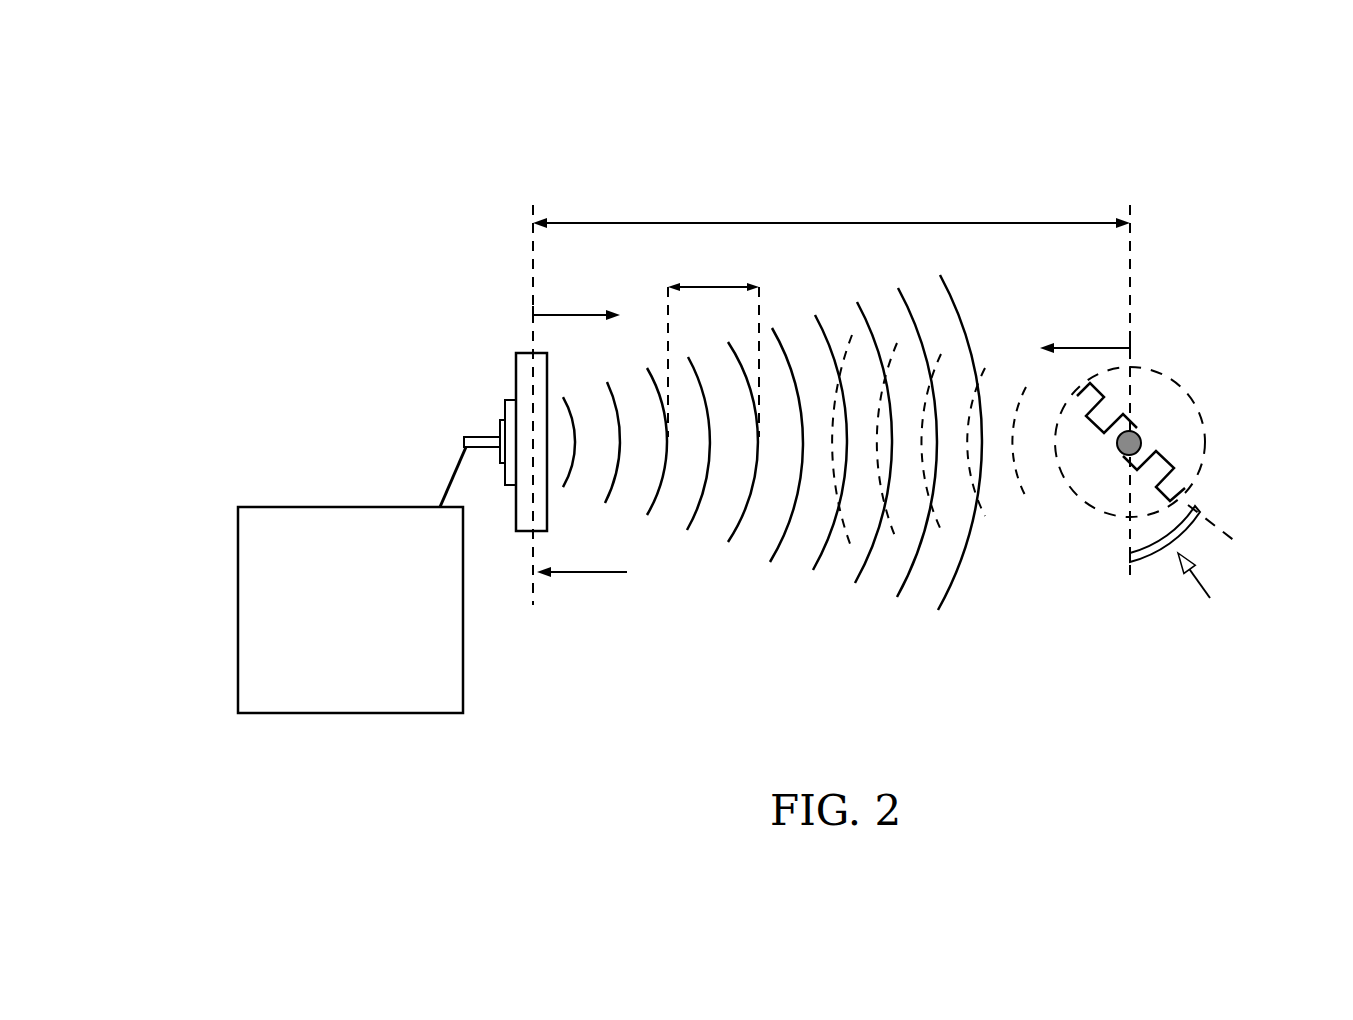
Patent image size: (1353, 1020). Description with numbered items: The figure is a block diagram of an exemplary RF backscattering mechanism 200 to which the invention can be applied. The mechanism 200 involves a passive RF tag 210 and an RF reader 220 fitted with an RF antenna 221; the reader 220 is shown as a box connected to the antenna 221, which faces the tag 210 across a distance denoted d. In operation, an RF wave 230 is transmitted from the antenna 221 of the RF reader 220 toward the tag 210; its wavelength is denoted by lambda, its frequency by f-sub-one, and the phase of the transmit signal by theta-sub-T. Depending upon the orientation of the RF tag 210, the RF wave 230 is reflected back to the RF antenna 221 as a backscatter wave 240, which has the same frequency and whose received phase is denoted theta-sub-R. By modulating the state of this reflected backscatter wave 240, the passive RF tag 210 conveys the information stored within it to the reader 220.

The RF backscattering mechanism 200 is at (200, 74).
The passive RF tag 210 is at (1160, 420).
The RF reader 220 is at (350, 610).
The RF antenna 221 is at (469, 420).
The RF wave 230 is at (766, 560).
The backscatter wave 240 is at (1069, 522).